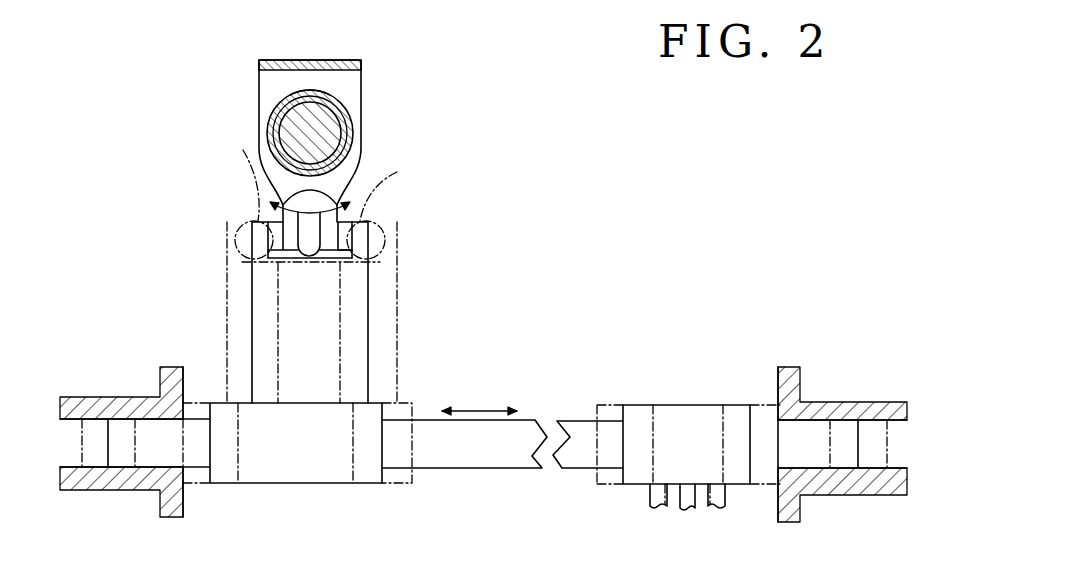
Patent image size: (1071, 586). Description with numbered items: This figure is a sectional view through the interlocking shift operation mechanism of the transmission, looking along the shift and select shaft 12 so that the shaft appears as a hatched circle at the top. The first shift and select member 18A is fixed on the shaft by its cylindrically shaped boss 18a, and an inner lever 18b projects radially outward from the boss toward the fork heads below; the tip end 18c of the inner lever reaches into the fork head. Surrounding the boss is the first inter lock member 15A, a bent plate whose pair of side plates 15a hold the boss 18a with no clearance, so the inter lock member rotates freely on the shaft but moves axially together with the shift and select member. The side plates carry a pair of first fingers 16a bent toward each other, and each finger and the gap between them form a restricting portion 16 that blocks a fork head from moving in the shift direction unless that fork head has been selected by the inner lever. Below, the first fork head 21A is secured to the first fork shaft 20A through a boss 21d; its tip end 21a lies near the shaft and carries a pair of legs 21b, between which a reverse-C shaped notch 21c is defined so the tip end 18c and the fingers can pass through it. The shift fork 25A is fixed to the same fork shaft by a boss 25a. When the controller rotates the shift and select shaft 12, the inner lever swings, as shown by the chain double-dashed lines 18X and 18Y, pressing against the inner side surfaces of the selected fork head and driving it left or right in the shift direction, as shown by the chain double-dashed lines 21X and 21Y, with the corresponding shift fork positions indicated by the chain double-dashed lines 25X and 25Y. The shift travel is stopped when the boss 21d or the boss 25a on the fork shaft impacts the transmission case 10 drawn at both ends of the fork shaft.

The transmission case 10 is at (120, 408).
The shift and select shaft 12 is at (330, 137).
The first inter lock member 15A is at (366, 92).
The side plates 15a is at (267, 90).
The restricting portion 16 is at (270, 202).
The first fingers 16a is at (266, 242).
The first shift and select member 18A is at (266, 116).
The boss 18a is at (303, 92).
The inner lever 18b is at (317, 200).
The tip end of inner lever 18c is at (307, 246).
The chain double-dashed line showing rotation of inner lever 18X is at (240, 147).
The chain double-dashed line showing rotation of inner lever 18Y is at (397, 172).
The first fork shaft 20A is at (472, 460).
The first fork head 21A is at (372, 317).
The tip end 21a is at (252, 263).
The legs 21b is at (270, 218).
The notch 21c is at (342, 262).
The boss 21d is at (280, 475).
The chain double-dashed line showing movement of fork head 21X is at (227, 333).
The chain double-dashed line showing movement of fork head 21Y is at (398, 358).
The shift fork 25A is at (685, 515).
The boss 25a is at (678, 405).
The chain double-dashed line showing shifted position of shift fork 25X is at (647, 495).
The chain double-dashed line showing shifted position of shift fork 25Y is at (727, 497).